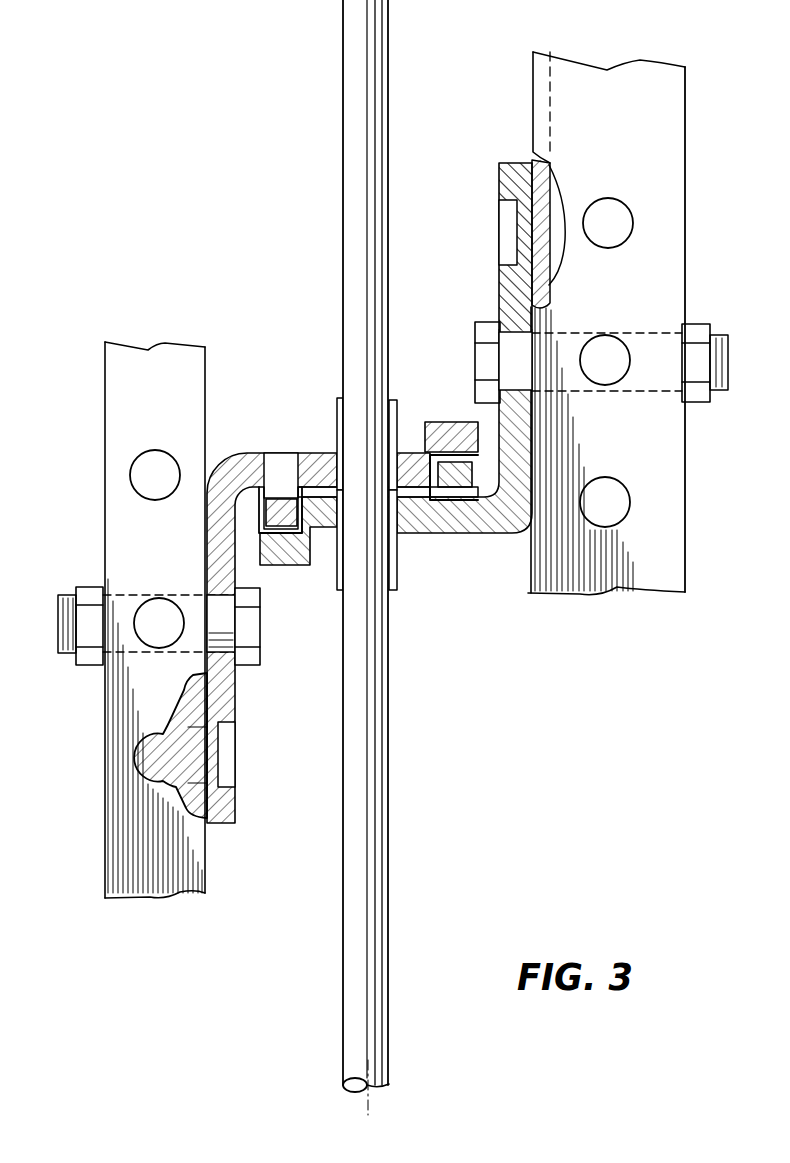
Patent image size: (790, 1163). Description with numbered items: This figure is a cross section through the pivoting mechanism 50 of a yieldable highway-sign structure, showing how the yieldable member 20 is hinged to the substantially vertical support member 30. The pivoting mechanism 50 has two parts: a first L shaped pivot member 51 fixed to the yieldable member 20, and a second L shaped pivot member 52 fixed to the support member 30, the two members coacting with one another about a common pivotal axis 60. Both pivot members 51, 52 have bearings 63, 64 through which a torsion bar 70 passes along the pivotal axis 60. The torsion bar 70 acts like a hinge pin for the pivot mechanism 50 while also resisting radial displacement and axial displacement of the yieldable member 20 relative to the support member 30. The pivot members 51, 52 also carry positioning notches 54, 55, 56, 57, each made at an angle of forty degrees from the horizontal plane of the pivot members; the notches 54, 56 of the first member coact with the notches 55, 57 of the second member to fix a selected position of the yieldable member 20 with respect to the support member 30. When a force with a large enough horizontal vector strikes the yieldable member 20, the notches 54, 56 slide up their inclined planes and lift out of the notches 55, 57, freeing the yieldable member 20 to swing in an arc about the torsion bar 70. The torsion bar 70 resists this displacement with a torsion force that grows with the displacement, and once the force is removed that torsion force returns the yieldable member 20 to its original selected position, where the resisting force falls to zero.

The yieldable member 20 is at (103, 808).
The support member 30 is at (685, 187).
The pivoting mechanism 50 is at (411, 537).
The first L shaped pivot member 51 is at (240, 692).
The second L shaped pivot member 52 is at (498, 287).
The positioning notch 54 is at (453, 422).
The positioning notch 55 is at (463, 482).
The positioning notch 56 is at (263, 512).
The positioning notch 57 is at (263, 550).
The pivotal axis 60 is at (365, 382).
The bearing 63 is at (338, 425).
The bearing 64 is at (338, 575).
The torsion bar 70 is at (388, 802).